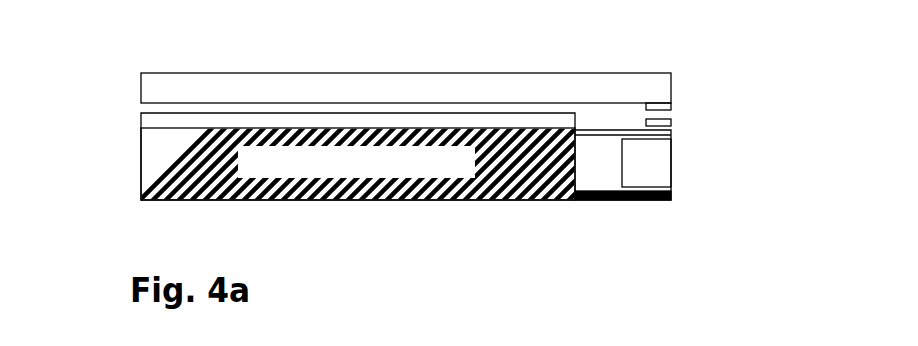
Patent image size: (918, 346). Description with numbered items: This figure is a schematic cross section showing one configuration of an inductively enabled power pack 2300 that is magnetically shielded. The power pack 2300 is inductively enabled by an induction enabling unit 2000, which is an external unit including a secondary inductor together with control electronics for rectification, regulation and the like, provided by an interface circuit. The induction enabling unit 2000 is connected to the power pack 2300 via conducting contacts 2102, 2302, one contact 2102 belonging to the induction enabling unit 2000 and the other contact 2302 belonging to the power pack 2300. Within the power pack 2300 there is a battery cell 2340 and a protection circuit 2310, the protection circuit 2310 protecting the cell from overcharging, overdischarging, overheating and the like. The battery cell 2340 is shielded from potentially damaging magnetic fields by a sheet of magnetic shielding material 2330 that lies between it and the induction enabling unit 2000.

The induction enabling unit 2000 is at (665, 83).
The conducting contact 2102 is at (672, 108).
The power pack 2300 is at (388, 156).
The conducting contact 2302 is at (672, 133).
The protection circuit 2310 is at (664, 173).
The sheet of magnetic shielding material 2330 is at (147, 120).
The battery cell 2340 is at (395, 187).